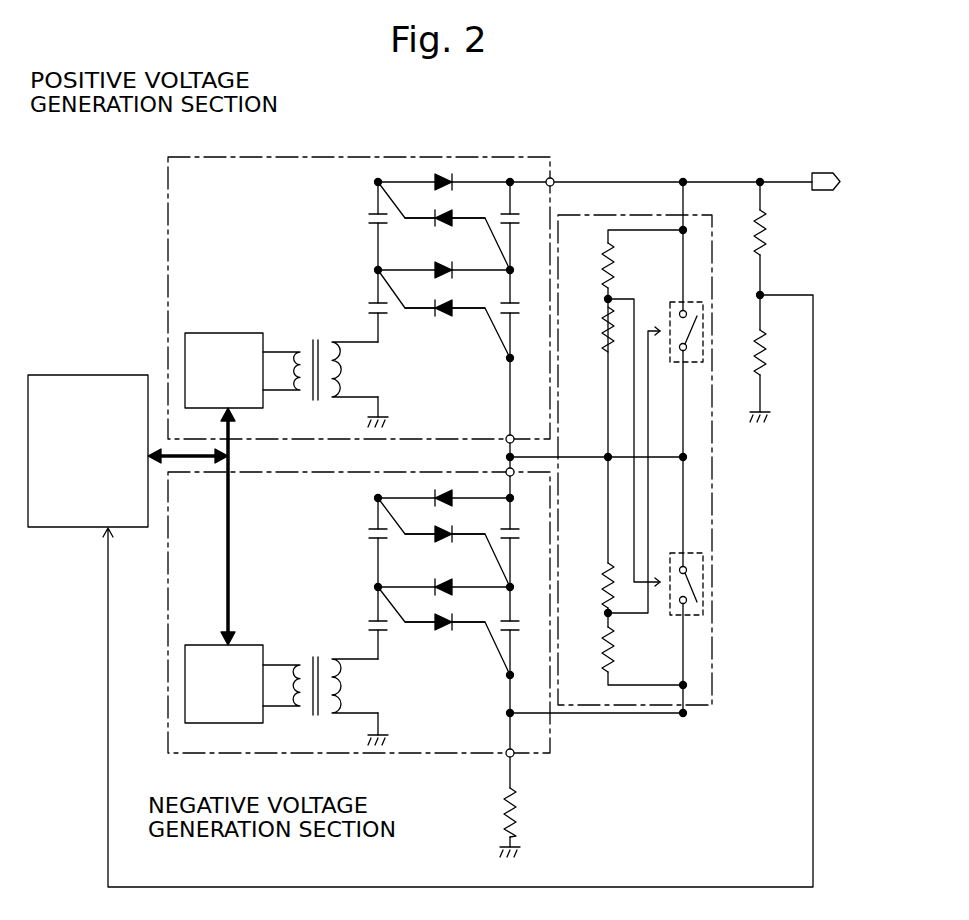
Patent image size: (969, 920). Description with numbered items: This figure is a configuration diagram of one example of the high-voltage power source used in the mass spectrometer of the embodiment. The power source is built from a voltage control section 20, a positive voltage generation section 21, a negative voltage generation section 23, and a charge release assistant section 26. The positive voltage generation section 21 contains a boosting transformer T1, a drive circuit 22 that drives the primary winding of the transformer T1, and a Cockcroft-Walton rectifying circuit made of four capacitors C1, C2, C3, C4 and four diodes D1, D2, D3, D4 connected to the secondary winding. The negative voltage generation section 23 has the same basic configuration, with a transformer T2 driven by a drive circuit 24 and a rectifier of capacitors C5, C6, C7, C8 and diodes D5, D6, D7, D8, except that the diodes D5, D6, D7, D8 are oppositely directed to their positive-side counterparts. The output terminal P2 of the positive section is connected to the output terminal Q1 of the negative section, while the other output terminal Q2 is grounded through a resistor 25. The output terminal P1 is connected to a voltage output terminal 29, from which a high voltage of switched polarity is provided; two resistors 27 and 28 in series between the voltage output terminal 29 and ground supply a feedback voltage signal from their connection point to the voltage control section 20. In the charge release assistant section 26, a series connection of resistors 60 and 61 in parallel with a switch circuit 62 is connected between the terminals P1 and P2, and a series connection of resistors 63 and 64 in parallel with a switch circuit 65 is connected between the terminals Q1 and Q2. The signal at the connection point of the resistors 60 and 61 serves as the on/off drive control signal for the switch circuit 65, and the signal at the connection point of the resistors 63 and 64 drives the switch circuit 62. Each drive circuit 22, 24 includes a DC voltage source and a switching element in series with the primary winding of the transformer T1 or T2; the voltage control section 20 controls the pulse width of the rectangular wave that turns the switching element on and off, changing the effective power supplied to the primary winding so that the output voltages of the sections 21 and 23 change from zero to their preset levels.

The voltage control section 20 is at (94, 374).
The positive voltage generation section 21 is at (241, 156).
The drive circuit 22 is at (219, 331).
The negative voltage generation section 23 is at (232, 758).
The drive circuit 24 is at (210, 644).
The resistor 25 is at (520, 822).
The charge release assistant section 26 is at (713, 491).
The resistor 27 is at (768, 229).
The resistor 28 is at (768, 349).
The voltage output terminal 29 is at (822, 172).
The resistor 60 is at (602, 265).
The resistor 61 is at (602, 332).
The switch circuit 62 is at (672, 298).
The resistor 63 is at (604, 570).
The resistor 64 is at (604, 636).
The switch circuit 65 is at (676, 553).
The output terminal P1 is at (552, 179).
The output terminal P2 is at (506, 437).
The output terminal Q1 is at (505, 470).
The output terminal Q2 is at (506, 762).
The capacitor C1 is at (367, 207).
The capacitor C2 is at (367, 299).
The capacitor C3 is at (520, 207).
The capacitor C4 is at (520, 299).
The capacitor C5 is at (367, 524).
The capacitor C6 is at (367, 615).
The capacitor C7 is at (520, 524).
The capacitor C8 is at (520, 615).
The diode D1 is at (430, 175).
The diode D2 is at (458, 211).
The diode D3 is at (430, 263).
The diode D4 is at (458, 300).
The diode D5 is at (430, 492).
The diode D6 is at (458, 527).
The diode D7 is at (430, 580).
The diode D8 is at (458, 615).
The boosting transformer T1 is at (320, 360).
The boosting transformer T2 is at (320, 675).